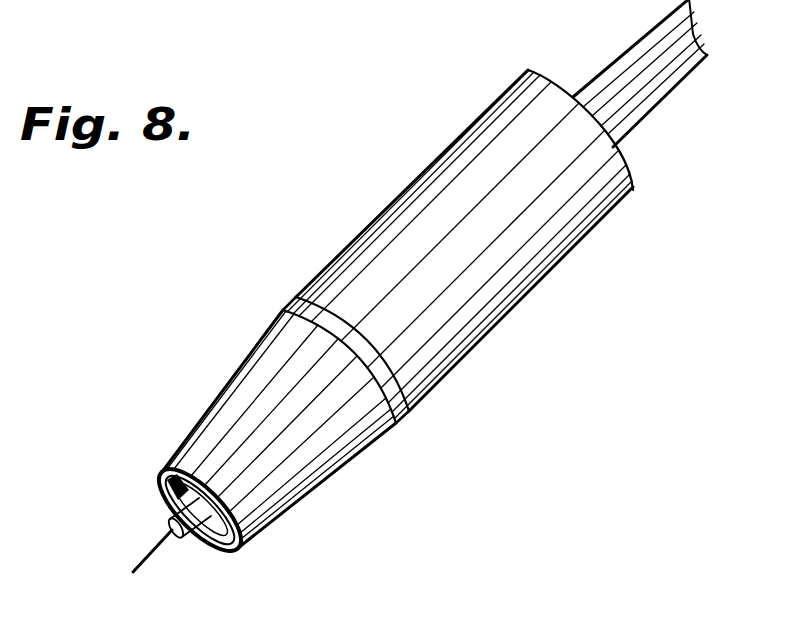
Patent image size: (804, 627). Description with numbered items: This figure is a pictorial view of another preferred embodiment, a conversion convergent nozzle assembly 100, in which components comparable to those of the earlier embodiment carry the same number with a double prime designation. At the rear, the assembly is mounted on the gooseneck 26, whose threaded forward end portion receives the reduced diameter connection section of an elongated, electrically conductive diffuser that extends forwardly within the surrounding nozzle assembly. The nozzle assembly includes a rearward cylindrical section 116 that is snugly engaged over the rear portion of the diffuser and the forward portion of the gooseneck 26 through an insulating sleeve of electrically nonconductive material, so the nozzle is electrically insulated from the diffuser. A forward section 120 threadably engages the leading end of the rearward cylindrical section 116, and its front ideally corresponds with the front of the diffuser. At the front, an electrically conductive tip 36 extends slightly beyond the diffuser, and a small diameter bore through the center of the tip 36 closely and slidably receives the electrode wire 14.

The conversion convergent nozzle assembly 100 is at (246, 273).
The rearward cylindrical section 116 is at (519, 301).
The forward section 120 is at (229, 384).
The gooseneck 26 is at (613, 64).
The electrically conductive tip 36 is at (172, 520).
The electrode wire 14 is at (148, 557).